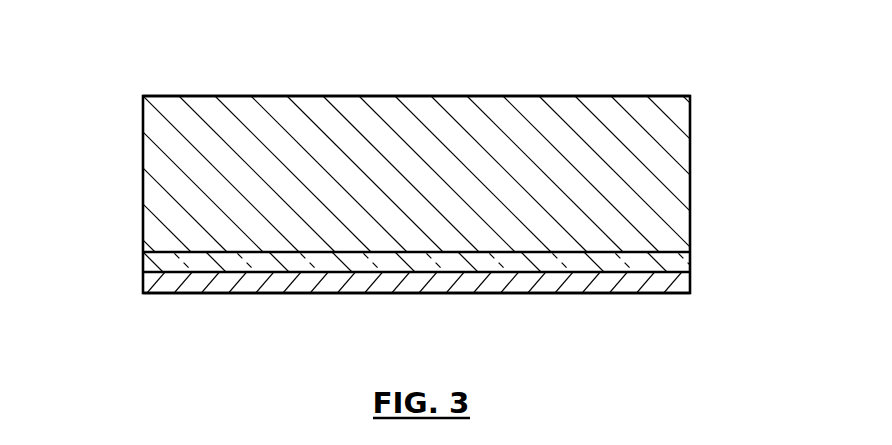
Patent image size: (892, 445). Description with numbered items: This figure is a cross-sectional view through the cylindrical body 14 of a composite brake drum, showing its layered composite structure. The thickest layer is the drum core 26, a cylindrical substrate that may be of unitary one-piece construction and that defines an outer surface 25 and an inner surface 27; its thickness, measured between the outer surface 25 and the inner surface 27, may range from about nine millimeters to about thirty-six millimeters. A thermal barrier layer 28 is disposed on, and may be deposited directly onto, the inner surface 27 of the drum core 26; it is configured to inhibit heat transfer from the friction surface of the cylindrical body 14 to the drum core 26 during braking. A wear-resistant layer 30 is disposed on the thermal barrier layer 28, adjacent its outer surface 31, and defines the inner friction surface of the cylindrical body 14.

The cylindrical body 14 is at (646, 52).
The outer surface 25 is at (315, 96).
The drum core 26 is at (143, 189).
The inner surface 27 is at (600, 252).
The thermal barrier layer 28 is at (690, 258).
The wear-resistant layer 30 is at (143, 285).
The outer surface 31 is at (215, 293).